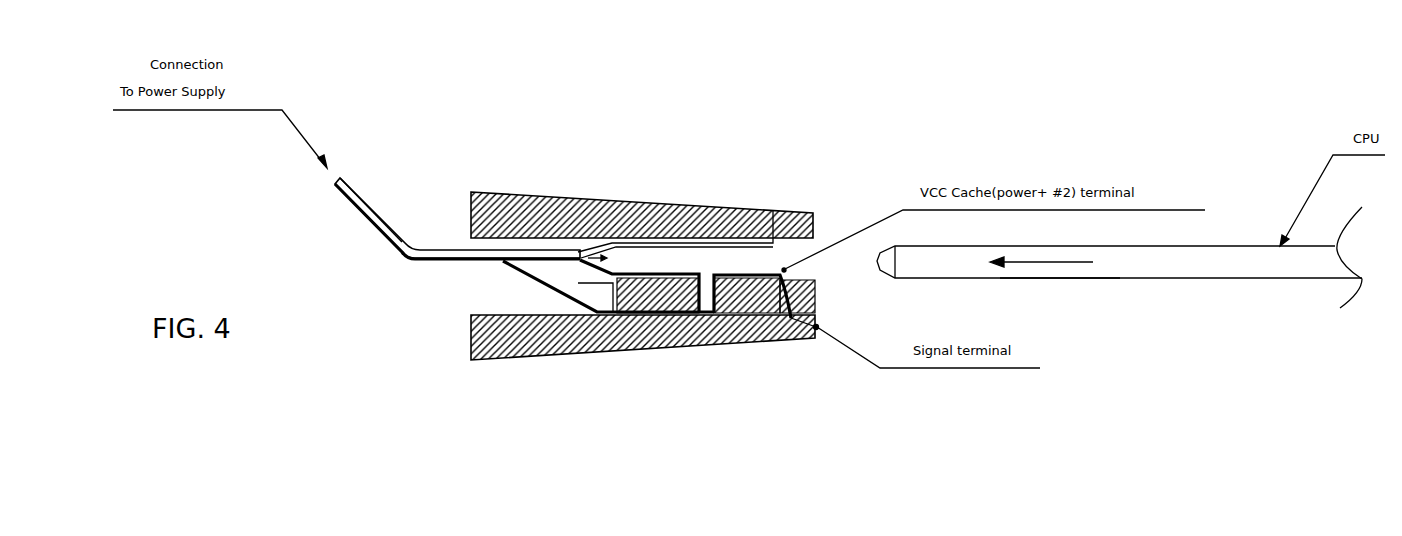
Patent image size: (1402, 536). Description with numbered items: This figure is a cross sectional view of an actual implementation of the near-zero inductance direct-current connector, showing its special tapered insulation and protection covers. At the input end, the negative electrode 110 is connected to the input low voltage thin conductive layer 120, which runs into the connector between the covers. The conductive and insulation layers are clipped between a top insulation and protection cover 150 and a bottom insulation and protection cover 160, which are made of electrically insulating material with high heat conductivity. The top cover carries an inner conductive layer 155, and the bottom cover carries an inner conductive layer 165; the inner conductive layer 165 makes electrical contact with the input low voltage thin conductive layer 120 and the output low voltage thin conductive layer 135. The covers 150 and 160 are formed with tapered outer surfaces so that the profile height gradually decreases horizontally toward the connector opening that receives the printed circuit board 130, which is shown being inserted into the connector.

The negative electrode 110 is at (393, 230).
The input low voltage thin conductive layer 120 is at (363, 215).
The printed circuit board 130 is at (1207, 245).
The output low voltage thin conductive layer 135 is at (1063, 278).
The top insulation and protection cover 150 is at (637, 198).
The inner conductive layer 155 is at (662, 235).
The bottom insulation and protection cover 160 is at (682, 333).
The inner conductive layer 165 is at (1175, 145).